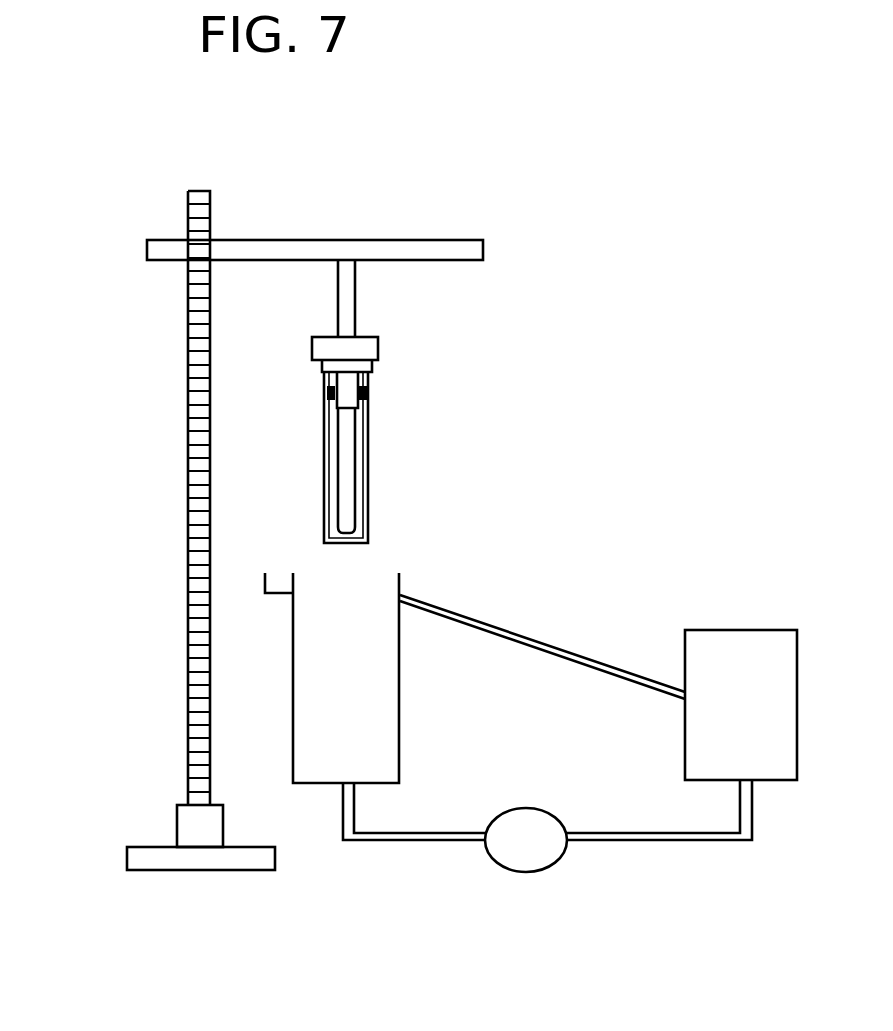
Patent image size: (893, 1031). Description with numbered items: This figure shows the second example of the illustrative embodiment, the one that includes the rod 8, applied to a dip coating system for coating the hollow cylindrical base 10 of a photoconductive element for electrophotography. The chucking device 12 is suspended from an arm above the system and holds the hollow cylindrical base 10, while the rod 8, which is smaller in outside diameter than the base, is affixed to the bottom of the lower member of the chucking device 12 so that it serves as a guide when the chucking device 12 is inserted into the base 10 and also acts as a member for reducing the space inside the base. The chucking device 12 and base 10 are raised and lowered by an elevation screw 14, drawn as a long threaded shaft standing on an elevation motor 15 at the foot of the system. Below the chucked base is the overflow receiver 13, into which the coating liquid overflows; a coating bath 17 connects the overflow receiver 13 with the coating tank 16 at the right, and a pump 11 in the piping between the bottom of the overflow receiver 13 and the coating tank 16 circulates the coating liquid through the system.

The rod 8 is at (357, 418).
The hollow cylindrical base 10 is at (323, 463).
The pump 11 is at (562, 857).
The chucking device 12 is at (357, 290).
The overflow receiver 13 is at (427, 595).
The elevation screw 14 is at (188, 500).
The elevation motor 15 is at (176, 820).
The coating tank 16 is at (718, 642).
The coating bath 17 is at (373, 608).